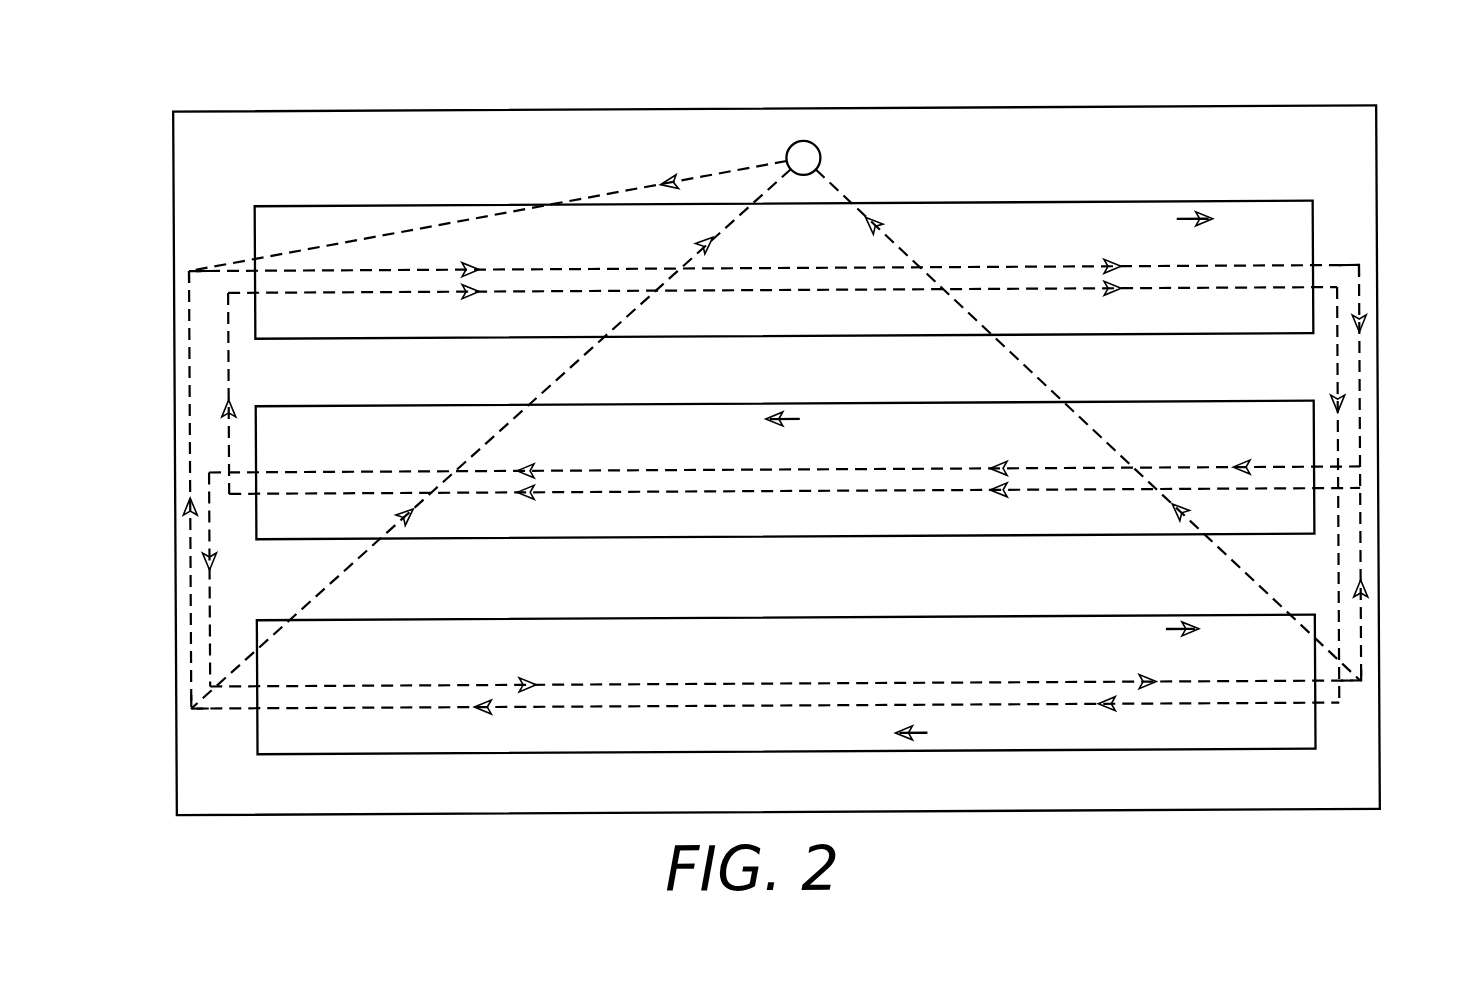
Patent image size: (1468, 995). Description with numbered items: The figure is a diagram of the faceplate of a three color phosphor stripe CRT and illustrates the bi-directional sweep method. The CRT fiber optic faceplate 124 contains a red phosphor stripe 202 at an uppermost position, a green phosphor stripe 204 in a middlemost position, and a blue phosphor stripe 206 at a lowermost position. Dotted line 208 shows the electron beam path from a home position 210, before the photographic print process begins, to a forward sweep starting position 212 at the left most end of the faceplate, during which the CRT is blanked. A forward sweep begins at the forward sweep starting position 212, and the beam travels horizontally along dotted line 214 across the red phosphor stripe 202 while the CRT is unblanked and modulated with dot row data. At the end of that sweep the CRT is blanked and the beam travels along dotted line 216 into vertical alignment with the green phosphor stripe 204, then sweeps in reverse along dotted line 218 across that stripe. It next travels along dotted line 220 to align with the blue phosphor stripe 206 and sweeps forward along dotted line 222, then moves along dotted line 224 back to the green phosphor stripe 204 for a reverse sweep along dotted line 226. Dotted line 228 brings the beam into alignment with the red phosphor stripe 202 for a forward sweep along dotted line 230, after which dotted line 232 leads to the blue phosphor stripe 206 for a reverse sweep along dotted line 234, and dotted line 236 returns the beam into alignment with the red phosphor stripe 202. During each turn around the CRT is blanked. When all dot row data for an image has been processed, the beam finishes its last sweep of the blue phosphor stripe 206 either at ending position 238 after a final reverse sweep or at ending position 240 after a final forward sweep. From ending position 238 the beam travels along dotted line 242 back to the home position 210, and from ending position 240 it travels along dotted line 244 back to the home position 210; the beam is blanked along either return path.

The CRT fiber optic faceplate 124 is at (1020, 107).
The red phosphor stripe 202 is at (1128, 203).
The green phosphor stripe 204 is at (1165, 402).
The blue phosphor stripe 206 is at (1095, 616).
The dotted line 208 is at (605, 196).
The home position 210 is at (789, 151).
The forward sweep starting position 212 is at (190, 268).
The dotted line 214 is at (735, 268).
The dotted line 216 is at (1360, 292).
The dotted line 218 is at (670, 469).
The dotted line 220 is at (210, 598).
The dotted line 222 is at (750, 684).
The dotted line 224 is at (1361, 556).
The dotted line 226 is at (707, 492).
The dotted line 228 is at (229, 390).
The dotted line 230 is at (697, 291).
The dotted line 232 is at (1342, 471).
The dotted line 234 is at (706, 707).
The dotted line 236 is at (190, 445).
The ending position 238 is at (190, 704).
The ending position 240 is at (1362, 681).
The dotted line 242 is at (592, 351).
The dotted line 244 is at (1018, 358).